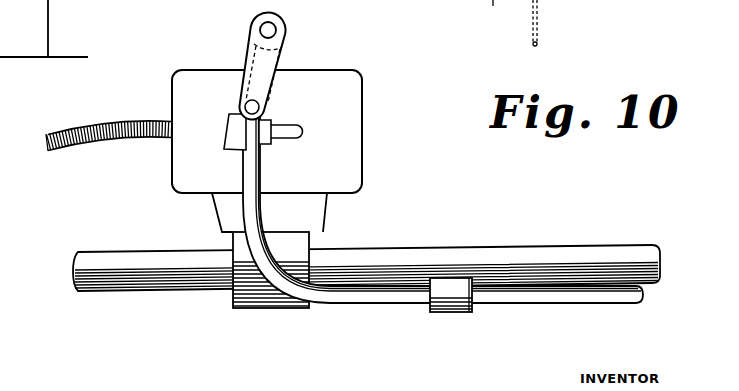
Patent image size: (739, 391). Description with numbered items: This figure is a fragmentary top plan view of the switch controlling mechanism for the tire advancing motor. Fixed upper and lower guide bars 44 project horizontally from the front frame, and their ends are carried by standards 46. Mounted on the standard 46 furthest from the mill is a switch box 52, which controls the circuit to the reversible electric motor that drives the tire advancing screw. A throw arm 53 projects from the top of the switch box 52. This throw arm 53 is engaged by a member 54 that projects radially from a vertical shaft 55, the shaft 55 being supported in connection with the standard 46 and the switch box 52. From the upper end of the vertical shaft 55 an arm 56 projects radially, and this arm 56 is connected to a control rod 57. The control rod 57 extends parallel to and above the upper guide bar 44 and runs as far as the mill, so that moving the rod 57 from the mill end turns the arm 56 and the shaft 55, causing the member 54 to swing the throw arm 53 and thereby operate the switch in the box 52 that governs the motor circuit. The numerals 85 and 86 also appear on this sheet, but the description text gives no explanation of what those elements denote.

The guide bar 44 is at (421, 265).
The standard 46 is at (233, 302).
The switch box 52 is at (343, 132).
The throw arm 53 is at (263, 150).
The member 54 is at (229, 131).
The vertical shaft 55 is at (268, 30).
The arm 56 is at (250, 64).
The control rod 57 is at (368, 299).
The connector 85 is at (538, 7).
The conduit 86 is at (496, 14).